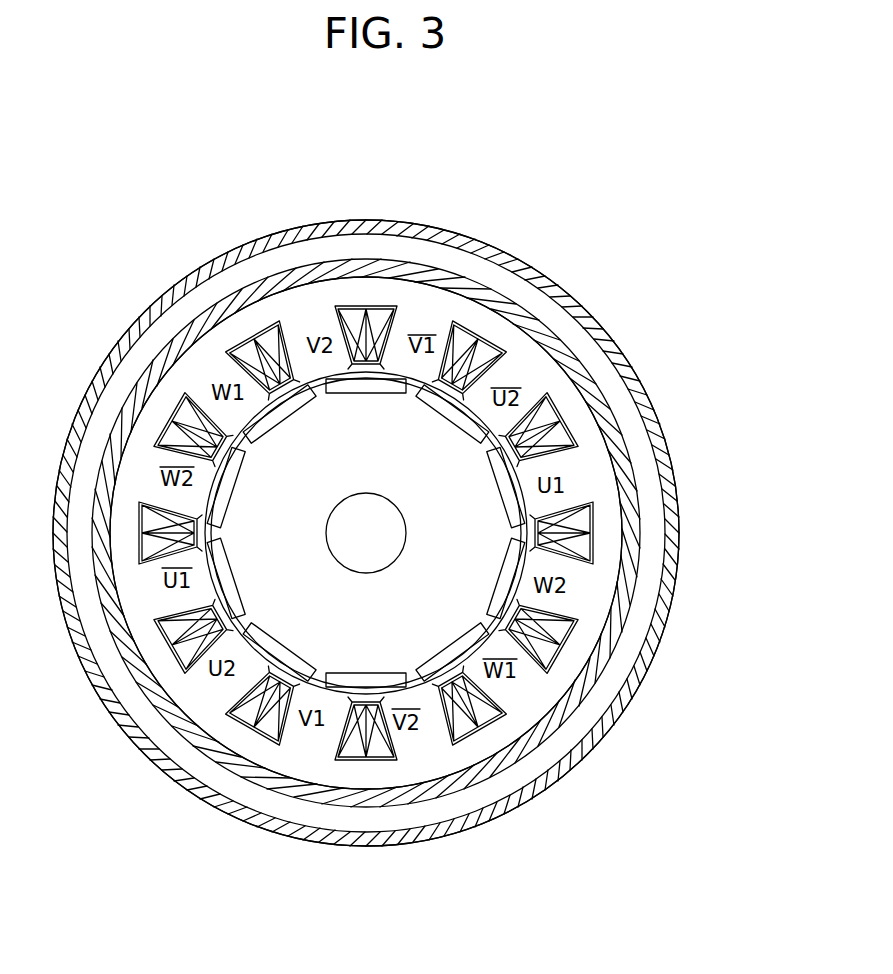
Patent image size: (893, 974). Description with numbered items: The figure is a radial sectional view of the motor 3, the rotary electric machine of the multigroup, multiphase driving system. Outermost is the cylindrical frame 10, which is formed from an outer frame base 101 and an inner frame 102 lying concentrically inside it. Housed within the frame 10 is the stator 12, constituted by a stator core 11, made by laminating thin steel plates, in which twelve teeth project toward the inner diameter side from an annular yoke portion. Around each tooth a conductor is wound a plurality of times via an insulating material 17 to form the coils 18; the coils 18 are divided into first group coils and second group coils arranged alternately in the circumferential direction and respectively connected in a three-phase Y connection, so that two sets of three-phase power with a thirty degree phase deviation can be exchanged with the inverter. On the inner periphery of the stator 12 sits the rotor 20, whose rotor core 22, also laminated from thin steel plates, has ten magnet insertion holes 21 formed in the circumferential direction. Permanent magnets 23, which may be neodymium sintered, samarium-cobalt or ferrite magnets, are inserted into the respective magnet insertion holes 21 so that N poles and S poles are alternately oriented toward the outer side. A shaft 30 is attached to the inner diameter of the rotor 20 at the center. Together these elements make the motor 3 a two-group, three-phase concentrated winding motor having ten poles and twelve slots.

The motor 3 is at (80, 143).
The cylindrical frame 10 is at (320, 166).
The outer frame base 101 is at (343, 221).
The inner frame 102 is at (402, 270).
The stator 12 is at (520, 221).
The stator core 11 is at (548, 372).
The insulating material 17 is at (507, 352).
The coils 18 is at (492, 352).
The rotor 20 is at (736, 452).
The magnet insertion holes 21 is at (497, 510).
The rotor core 22 is at (472, 478).
The permanent magnets 23 is at (512, 488).
The shaft 30 is at (378, 548).